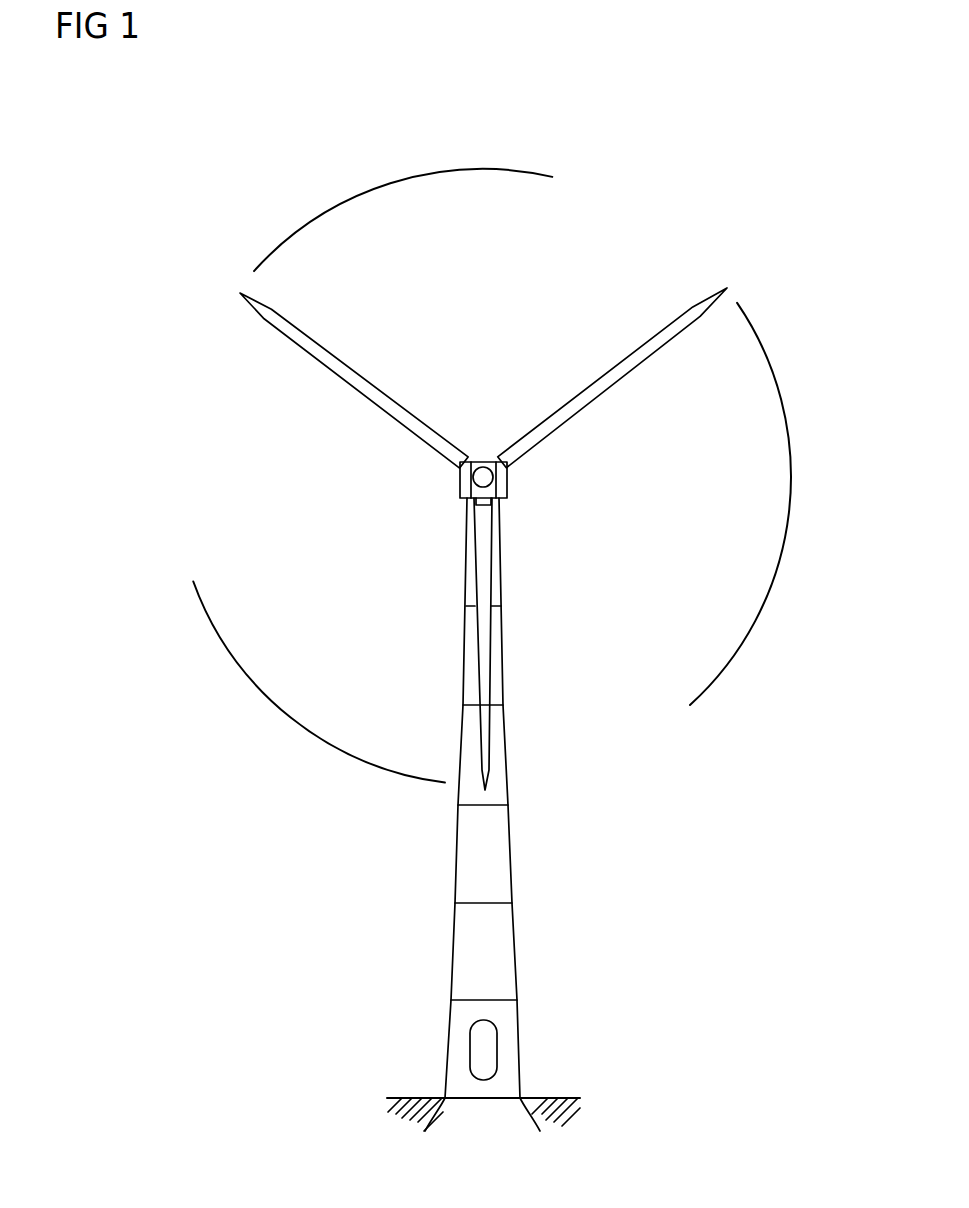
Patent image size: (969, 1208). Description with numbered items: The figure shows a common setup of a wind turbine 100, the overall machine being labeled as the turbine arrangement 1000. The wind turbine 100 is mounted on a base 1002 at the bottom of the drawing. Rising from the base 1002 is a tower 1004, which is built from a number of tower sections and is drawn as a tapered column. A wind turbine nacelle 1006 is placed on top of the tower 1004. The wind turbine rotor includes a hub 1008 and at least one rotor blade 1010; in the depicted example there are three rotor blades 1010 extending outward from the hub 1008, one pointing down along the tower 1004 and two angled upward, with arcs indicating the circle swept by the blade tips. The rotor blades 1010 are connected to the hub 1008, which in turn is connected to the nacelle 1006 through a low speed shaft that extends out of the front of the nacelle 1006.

The wind turbine 100 is at (781, 106).
The wind turbine 1000 is at (411, 925).
The base 1002 is at (404, 1106).
The tower 1004 is at (508, 851).
The wind turbine nacelle 1006 is at (507, 488).
The hub 1008 is at (462, 488).
The rotor blade 1010 is at (491, 681).